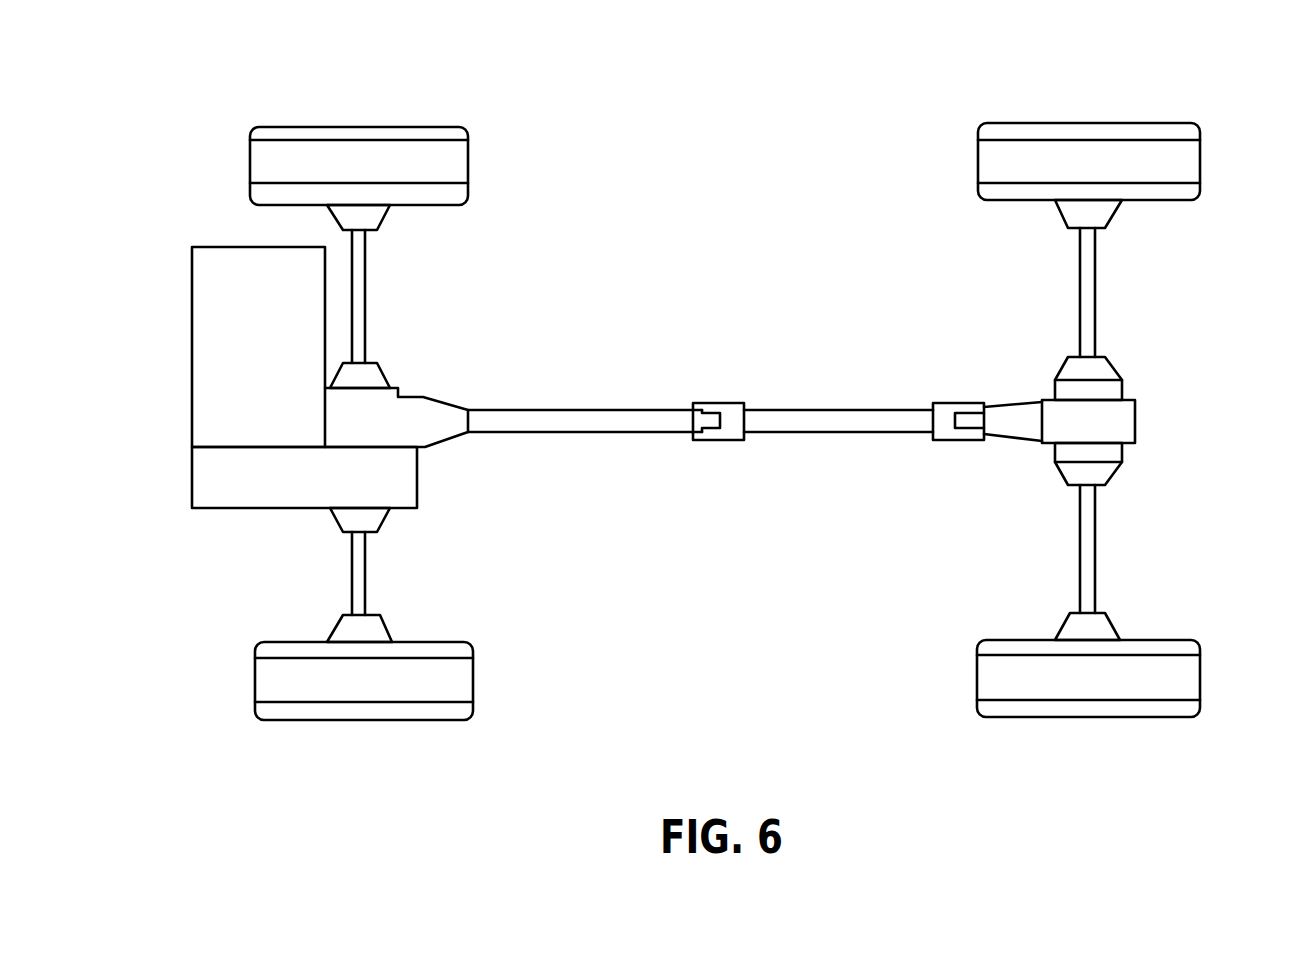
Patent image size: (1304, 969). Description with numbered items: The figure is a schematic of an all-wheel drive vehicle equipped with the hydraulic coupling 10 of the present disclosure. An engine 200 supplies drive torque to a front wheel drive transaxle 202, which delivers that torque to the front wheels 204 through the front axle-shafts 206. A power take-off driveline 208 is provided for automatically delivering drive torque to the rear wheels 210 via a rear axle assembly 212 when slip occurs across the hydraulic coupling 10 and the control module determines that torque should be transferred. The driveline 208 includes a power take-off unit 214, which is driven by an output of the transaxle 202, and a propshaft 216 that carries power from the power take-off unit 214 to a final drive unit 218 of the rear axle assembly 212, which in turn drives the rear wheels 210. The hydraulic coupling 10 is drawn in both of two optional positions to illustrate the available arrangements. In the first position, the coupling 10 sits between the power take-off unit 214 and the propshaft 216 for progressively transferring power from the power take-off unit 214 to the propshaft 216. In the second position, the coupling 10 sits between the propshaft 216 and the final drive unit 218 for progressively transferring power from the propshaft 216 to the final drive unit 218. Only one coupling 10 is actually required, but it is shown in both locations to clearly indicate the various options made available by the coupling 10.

The hydraulic coupling 10 is at (445, 417).
The engine 200 is at (230, 363).
The front wheel drive transaxle 202 is at (270, 495).
The front wheels 204 is at (347, 153).
The front axle-shafts 206 is at (360, 271).
The power take-off driveline 208 is at (743, 353).
The rear wheels 210 is at (1078, 150).
The rear axle assembly 212 is at (1095, 287).
The power take-off unit 214 is at (383, 371).
The propshaft 216 is at (838, 422).
The final drive unit 218 is at (1127, 416).